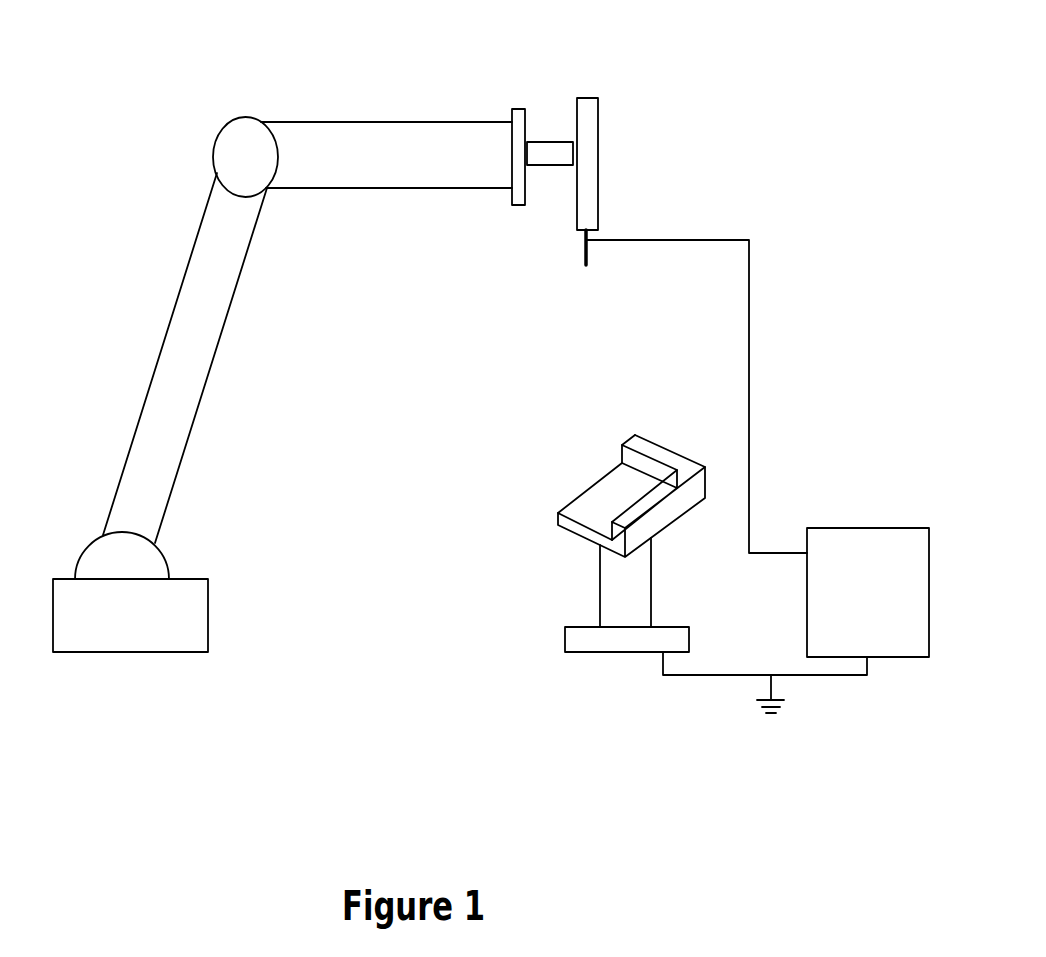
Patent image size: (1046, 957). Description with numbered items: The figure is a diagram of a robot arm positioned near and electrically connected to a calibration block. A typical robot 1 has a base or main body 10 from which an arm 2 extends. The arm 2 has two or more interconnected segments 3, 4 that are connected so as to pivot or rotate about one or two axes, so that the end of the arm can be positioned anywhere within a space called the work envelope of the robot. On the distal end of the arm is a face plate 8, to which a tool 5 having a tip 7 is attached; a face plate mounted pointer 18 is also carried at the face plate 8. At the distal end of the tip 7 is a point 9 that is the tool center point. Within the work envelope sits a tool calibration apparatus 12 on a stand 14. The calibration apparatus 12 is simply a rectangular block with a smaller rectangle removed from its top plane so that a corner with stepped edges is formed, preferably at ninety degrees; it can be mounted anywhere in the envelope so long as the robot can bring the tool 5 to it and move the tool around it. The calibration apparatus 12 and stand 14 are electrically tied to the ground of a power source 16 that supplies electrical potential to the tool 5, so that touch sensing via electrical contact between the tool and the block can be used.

The robot 1 is at (314, 344).
The arm 2 is at (310, 207).
The arm segment 3 is at (193, 375).
The arm segment 4 is at (476, 180).
The tool 5 is at (590, 130).
The tip 7 is at (589, 257).
The face plate 8 is at (518, 127).
The point 9 is at (587, 263).
The base 10 is at (193, 605).
The tool calibration apparatus 12 is at (615, 485).
The stand 14 is at (618, 607).
The power source 16 is at (903, 542).
The face plate mounted pointer 18 is at (565, 185).